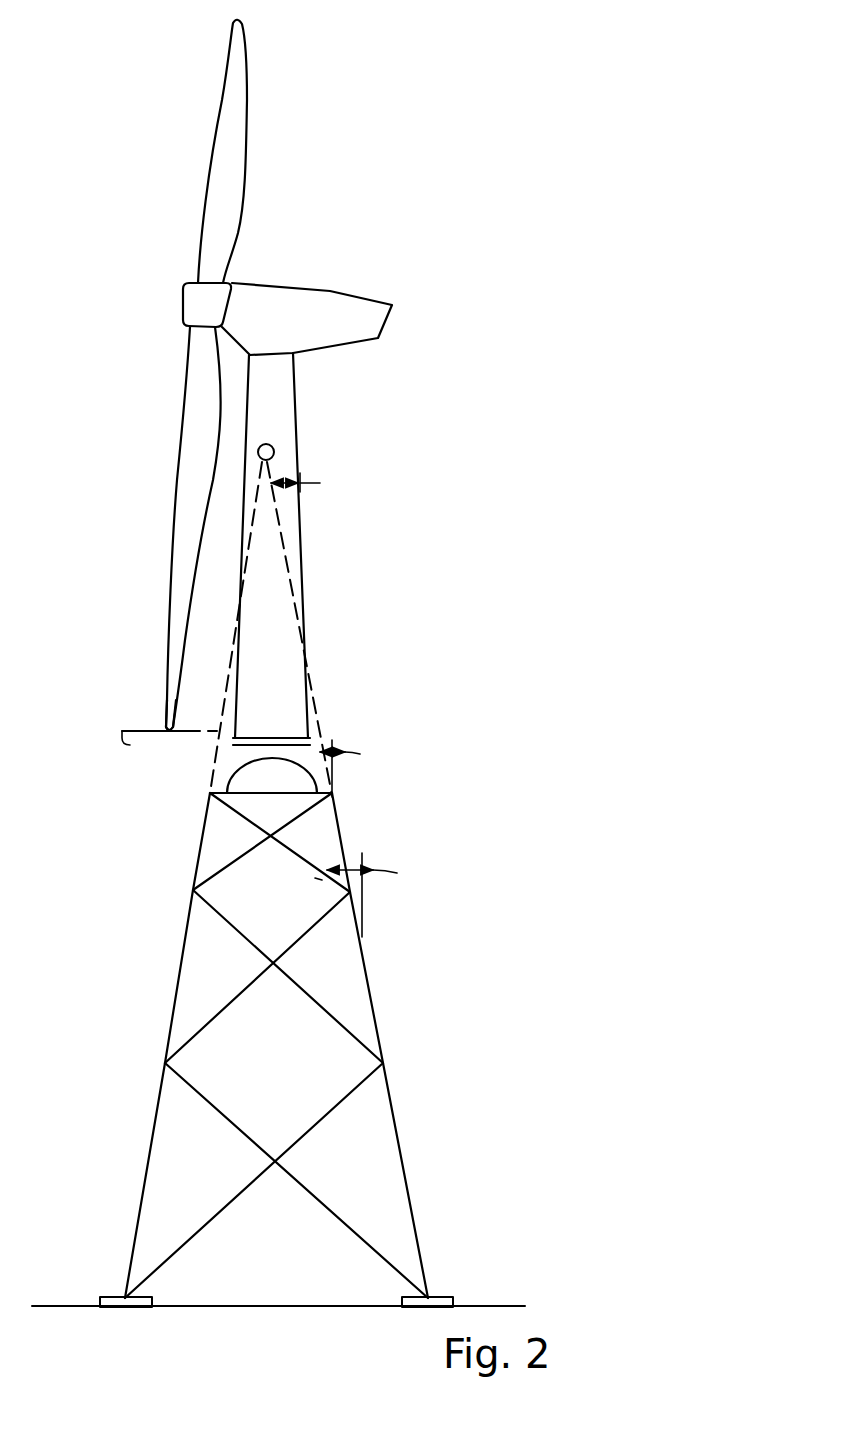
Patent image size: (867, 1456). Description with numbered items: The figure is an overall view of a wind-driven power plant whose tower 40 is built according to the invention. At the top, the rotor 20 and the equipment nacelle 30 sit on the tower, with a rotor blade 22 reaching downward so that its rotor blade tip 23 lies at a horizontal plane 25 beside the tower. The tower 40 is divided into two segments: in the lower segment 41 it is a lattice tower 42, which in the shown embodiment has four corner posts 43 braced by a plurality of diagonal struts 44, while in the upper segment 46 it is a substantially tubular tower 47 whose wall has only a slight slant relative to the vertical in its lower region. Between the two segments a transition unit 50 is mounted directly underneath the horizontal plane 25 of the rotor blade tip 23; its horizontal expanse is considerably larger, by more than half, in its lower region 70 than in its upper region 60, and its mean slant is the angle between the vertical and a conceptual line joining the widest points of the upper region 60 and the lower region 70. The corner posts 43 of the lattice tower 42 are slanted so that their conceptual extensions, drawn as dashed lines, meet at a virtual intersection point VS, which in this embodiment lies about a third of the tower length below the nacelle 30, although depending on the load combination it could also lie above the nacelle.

The rotor 20 is at (160, 286).
The rotor blade 22 is at (188, 472).
The rotor blade tip 23 is at (165, 726).
The horizontal plane of the rotor blade tip 25 is at (130, 745).
The equipment nacelle 30 is at (333, 312).
The tower 40 is at (331, 825).
The lower segment 41 is at (324, 1009).
The lattice tower 42 is at (370, 992).
The corner posts 43 is at (395, 1103).
The diagonal struts 44 is at (313, 1132).
The upper segment 46 is at (430, 528).
The tubular tower 47 is at (288, 617).
The transition unit 50 is at (217, 760).
The upper region 60 is at (292, 768).
The lower region 70 is at (342, 790).
The virtual intersection point VS is at (274, 453).